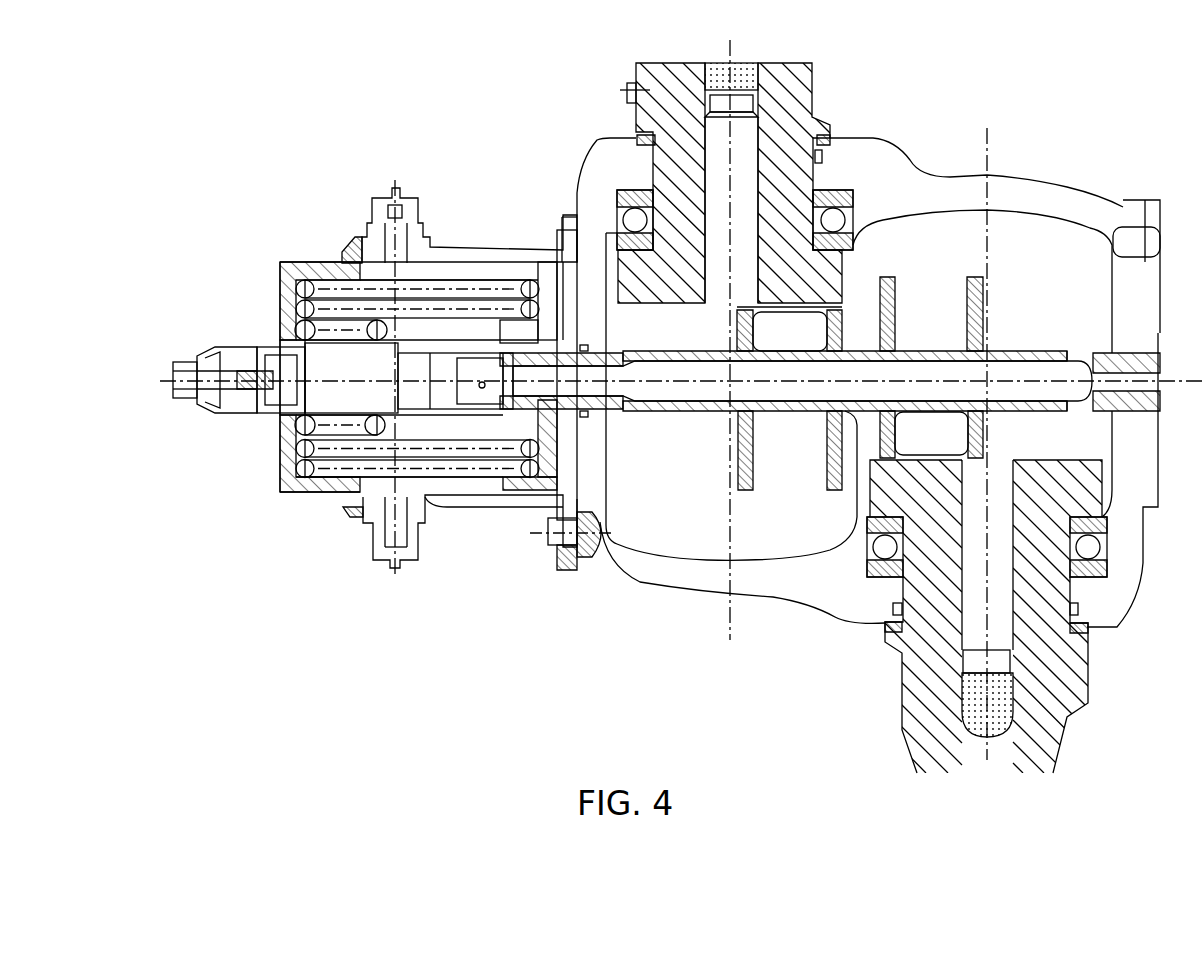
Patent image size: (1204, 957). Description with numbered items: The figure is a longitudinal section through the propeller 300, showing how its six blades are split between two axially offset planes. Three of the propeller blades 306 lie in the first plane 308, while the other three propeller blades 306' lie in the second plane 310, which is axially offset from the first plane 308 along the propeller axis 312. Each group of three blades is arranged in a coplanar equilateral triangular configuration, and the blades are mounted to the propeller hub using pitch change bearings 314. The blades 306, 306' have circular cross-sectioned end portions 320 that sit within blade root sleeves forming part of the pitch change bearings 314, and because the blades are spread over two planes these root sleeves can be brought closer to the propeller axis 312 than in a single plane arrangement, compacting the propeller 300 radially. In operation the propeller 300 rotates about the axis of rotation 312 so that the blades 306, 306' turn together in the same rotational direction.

The propeller 300 is at (349, 91).
The propeller blades 306 is at (766, 183).
The propeller blades 306' is at (943, 616).
The first plane 308 is at (724, 627).
The second plane 310 is at (993, 134).
The propeller axis 312 is at (380, 378).
The pitch change bearings 314 is at (875, 261).
The circular cross-sectioned end portions 320 is at (818, 282).